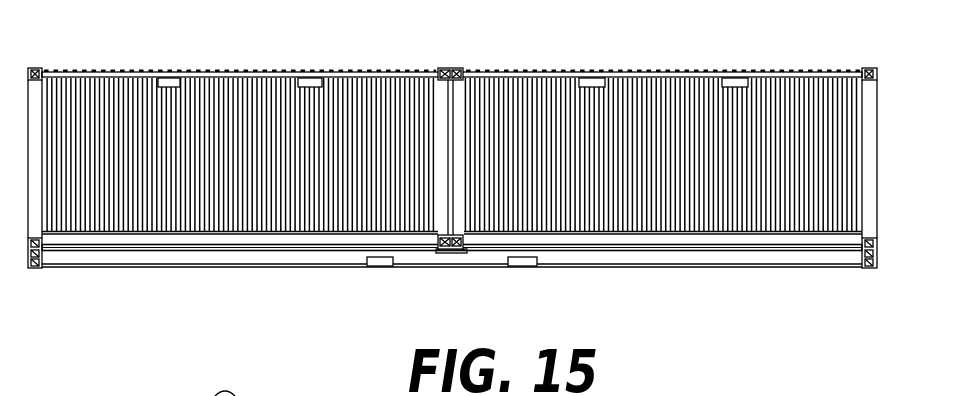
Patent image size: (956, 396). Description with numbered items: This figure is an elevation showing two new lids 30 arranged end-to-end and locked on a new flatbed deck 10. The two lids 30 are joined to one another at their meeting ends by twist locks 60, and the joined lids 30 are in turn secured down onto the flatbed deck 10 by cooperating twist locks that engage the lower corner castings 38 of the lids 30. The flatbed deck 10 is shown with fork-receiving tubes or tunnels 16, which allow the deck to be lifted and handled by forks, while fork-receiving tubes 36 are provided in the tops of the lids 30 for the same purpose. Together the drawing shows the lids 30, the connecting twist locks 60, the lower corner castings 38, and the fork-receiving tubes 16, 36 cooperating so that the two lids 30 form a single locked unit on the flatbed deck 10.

The flatbed deck 10 is at (165, 269).
The fork-receiving tubes or tunnels 16 is at (383, 269).
The lid 30 is at (349, 71).
The fork-receiving tubes 36 is at (172, 77).
The lower corner castings 38 is at (461, 72).
The twist locks 60 is at (449, 71).